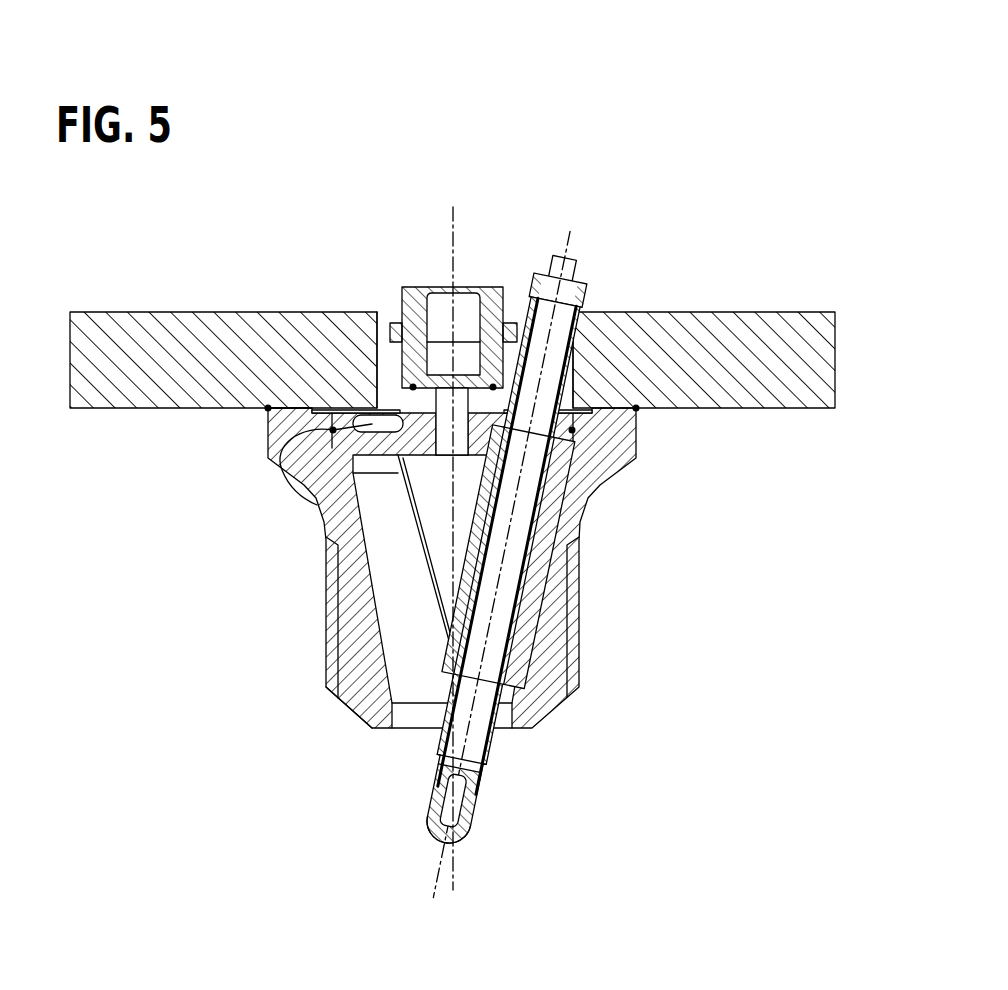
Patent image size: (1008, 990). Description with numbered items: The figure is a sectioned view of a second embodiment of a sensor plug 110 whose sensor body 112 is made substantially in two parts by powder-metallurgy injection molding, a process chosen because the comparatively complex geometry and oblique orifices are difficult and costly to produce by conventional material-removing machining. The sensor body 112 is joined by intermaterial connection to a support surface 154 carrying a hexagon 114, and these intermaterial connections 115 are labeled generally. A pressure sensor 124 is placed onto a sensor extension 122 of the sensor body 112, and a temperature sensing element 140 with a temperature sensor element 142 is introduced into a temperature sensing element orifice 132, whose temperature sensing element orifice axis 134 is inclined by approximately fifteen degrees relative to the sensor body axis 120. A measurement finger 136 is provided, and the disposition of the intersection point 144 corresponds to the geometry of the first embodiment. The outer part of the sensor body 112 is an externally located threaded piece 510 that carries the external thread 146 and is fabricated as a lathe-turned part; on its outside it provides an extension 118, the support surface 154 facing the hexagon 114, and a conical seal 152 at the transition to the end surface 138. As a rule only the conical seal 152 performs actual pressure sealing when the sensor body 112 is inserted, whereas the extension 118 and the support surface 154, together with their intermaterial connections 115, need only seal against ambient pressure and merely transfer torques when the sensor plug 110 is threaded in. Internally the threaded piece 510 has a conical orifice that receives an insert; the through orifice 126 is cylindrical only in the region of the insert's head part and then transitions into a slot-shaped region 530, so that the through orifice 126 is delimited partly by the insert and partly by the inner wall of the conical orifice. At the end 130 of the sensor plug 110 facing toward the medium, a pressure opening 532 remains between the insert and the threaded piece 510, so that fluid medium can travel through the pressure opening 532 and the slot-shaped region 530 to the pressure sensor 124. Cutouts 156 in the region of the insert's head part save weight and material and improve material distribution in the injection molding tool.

The sensor plug 110 is at (731, 216).
The sensor body 112 is at (560, 660).
The hexagon 114 is at (797, 326).
The intermaterial connections 115 is at (413, 387).
The extension 118 is at (572, 430).
The sensor body axis 120 is at (449, 215).
The sensor extension 122 is at (395, 407).
The pressure sensor 124 is at (412, 300).
The through orifice 126 is at (462, 388).
The end 130 is at (479, 857).
The temperature sensing element orifice 132 is at (552, 497).
The temperature sensing element orifice axis 134 is at (542, 530).
The measurement finger 136 is at (490, 757).
The end surface 138 is at (386, 732).
The temperature sensing element 140 is at (546, 592).
The temperature sensor element 142 is at (480, 793).
The intersection point 144 is at (473, 827).
The external thread 146 is at (579, 632).
The conical seal 152 is at (343, 703).
The support surface 154 is at (283, 402).
The cutouts 156 is at (300, 492).
The threaded piece 510 is at (340, 607).
The slot-shaped region 530 is at (438, 498).
The pressure opening 532 is at (417, 736).